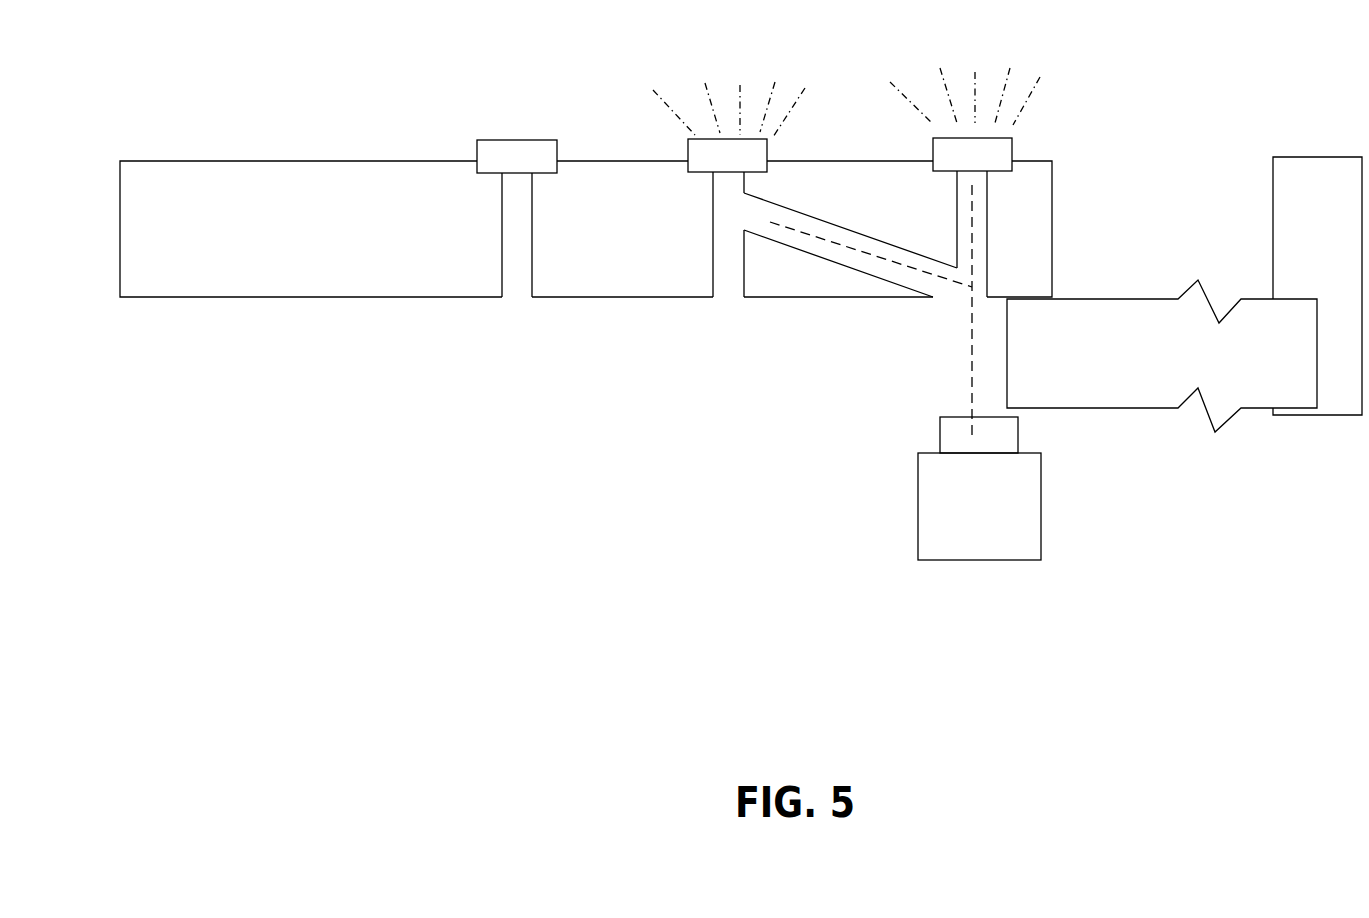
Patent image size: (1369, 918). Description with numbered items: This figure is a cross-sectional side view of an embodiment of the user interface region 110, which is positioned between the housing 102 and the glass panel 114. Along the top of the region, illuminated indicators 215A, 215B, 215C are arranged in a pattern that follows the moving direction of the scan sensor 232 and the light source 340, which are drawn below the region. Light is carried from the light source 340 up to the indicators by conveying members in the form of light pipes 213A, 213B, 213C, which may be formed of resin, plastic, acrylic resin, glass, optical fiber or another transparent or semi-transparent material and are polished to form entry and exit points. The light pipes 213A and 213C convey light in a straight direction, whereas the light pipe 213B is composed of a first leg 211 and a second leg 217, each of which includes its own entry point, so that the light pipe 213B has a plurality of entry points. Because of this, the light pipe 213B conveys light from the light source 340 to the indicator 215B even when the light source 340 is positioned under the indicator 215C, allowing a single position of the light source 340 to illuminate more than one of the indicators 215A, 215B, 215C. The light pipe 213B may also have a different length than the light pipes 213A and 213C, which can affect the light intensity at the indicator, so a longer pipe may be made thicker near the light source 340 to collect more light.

The housing 102 is at (254, 160).
The user interface region 110 is at (496, 498).
The glass panel 114 is at (1170, 299).
The first leg 211 is at (713, 250).
The light pipe 213A is at (502, 298).
The light pipe 213B is at (714, 298).
The light pipe 213C is at (957, 233).
The illuminated indicator 215A is at (495, 140).
The illuminated indicator 215B is at (688, 140).
The illuminated indicator 215C is at (933, 138).
The second leg 217 is at (861, 234).
The scan sensor 232 is at (954, 535).
The light source 340 is at (940, 432).